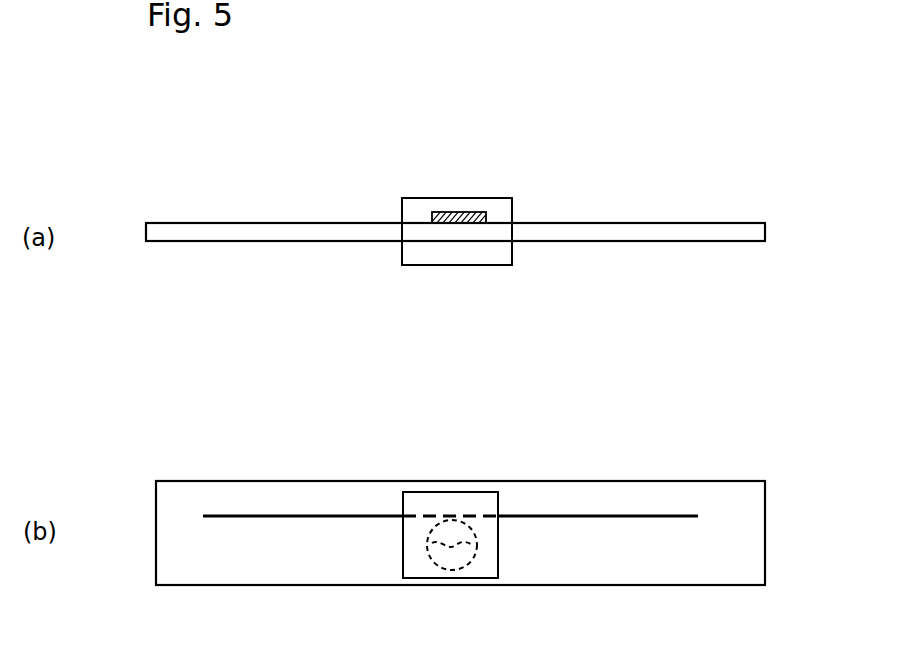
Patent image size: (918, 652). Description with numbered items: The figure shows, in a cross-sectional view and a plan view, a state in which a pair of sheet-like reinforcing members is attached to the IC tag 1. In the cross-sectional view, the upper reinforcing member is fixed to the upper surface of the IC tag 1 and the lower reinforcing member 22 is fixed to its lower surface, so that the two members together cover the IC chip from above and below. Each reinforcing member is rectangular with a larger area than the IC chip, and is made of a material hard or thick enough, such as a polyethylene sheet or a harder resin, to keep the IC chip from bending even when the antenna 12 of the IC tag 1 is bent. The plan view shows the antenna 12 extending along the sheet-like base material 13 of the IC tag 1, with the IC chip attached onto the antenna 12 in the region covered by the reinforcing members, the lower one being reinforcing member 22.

The IC tag 1 is at (670, 236).
The antenna 12 is at (284, 516).
The sheet-like base material 13 is at (690, 582).
The reinforcing member 22 is at (497, 255).